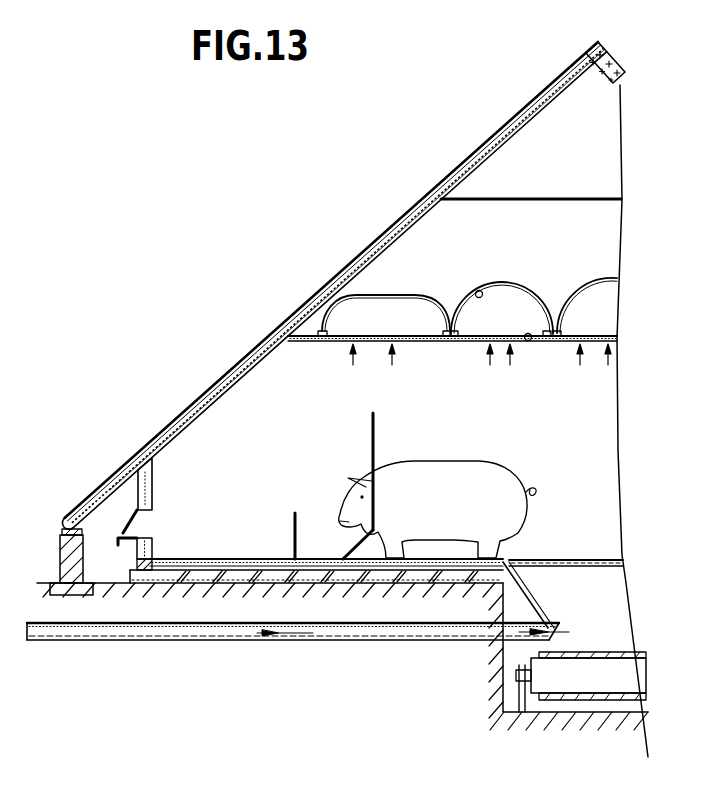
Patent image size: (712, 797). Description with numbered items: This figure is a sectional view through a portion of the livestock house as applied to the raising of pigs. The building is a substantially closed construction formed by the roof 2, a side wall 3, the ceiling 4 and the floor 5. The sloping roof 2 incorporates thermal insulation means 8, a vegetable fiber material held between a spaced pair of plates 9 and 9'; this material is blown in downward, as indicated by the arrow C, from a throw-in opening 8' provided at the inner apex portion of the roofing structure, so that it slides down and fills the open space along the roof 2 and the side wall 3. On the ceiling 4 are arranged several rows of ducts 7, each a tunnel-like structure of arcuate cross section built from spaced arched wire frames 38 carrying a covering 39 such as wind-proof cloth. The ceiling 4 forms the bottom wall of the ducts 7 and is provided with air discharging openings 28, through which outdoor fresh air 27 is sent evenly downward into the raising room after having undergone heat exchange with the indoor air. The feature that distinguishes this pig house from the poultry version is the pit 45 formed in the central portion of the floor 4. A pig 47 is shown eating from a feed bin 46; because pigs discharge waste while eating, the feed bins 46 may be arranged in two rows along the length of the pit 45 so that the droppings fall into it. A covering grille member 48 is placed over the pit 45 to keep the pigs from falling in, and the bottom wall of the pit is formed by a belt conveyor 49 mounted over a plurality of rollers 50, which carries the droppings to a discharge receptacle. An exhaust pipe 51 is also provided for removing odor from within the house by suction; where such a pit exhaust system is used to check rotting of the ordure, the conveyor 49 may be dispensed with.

The roof 2 is at (460, 165).
The thermal insulation means 8 is at (332, 288).
The throw-in opening 8' is at (627, 89).
The plate 9 is at (339, 290).
The plate 9' is at (357, 281).
The arrow C is at (600, 70).
The side wall 3 is at (152, 480).
The ceiling 4 is at (312, 343).
The duct 7 is at (377, 327).
The arched wire frame 38 is at (477, 291).
The covering 39 is at (525, 284).
The outdoor fresh air 27 is at (474, 369).
The air discharging opening 28 is at (531, 342).
The feed bin 46 is at (298, 525).
The floor 5 is at (316, 535).
The pig 47 is at (497, 473).
The covering grille member 48 is at (556, 556).
The pit 45 is at (603, 582).
The exhaust pipe 51 is at (548, 620).
The belt conveyor 49 is at (604, 655).
The roller 50 is at (583, 687).